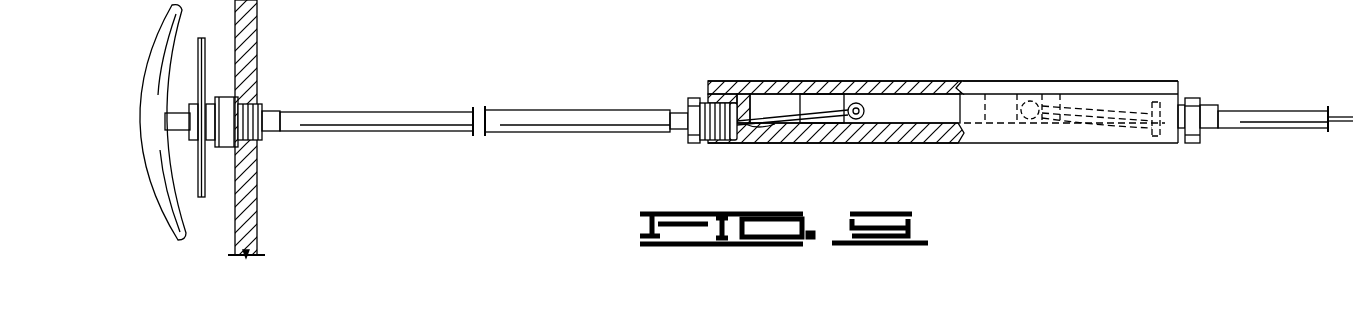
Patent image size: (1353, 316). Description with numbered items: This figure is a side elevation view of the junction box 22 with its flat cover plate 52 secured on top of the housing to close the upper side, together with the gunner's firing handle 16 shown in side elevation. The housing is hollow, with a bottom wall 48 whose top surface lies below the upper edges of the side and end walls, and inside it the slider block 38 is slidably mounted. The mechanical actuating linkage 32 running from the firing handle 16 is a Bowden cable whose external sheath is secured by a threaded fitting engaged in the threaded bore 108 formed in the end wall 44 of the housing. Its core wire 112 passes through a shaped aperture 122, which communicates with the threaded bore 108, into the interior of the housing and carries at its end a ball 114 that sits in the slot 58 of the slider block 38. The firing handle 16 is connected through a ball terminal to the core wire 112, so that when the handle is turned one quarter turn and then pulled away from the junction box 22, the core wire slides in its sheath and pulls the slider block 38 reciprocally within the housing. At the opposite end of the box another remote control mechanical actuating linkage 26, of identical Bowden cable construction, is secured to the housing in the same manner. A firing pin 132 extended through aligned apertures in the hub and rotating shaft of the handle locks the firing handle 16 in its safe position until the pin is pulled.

The firing handle 16 is at (137, 116).
The firing pin 132 is at (205, 44).
The mechanical actuating linkage 32 is at (345, 112).
The junction box 22 is at (1042, 146).
The cover plate 52 is at (740, 82).
The bottom wall 48 is at (920, 142).
The slot 58 is at (895, 104).
The end wall 44 is at (704, 96).
The threaded bore 108 is at (716, 146).
The core wire 112 is at (796, 104).
The aperture 122 is at (748, 130).
The ball 114 is at (856, 122).
The slider block 38 is at (836, 92).
The mechanical actuating linkage 26 is at (1248, 112).